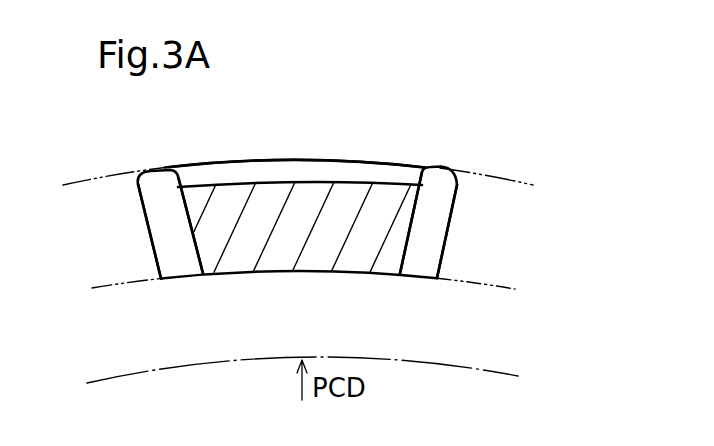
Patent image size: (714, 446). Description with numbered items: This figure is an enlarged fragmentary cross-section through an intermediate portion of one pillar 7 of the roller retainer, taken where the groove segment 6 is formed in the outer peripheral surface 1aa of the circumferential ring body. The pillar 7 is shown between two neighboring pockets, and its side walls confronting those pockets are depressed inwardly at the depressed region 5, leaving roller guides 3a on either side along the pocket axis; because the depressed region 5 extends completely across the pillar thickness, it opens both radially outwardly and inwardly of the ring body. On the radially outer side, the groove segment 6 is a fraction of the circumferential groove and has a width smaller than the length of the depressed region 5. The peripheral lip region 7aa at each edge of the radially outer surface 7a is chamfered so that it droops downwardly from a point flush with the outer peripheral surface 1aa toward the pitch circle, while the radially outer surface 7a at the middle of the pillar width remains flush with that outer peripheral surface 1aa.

The outer peripheral surface 1aa is at (473, 170).
The roller guides 3a is at (149, 232).
The depressed region 5 is at (197, 257).
The groove segment 6 is at (358, 170).
The pillar 7 is at (300, 202).
The radially outer surface 7a is at (227, 162).
The peripheral lip region 7aa is at (135, 177).